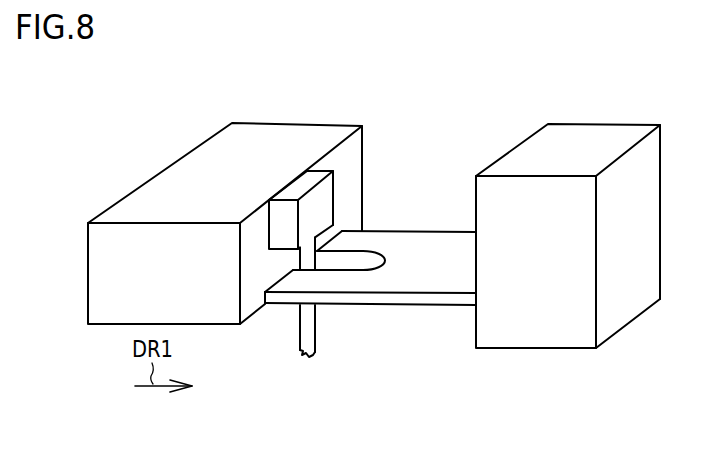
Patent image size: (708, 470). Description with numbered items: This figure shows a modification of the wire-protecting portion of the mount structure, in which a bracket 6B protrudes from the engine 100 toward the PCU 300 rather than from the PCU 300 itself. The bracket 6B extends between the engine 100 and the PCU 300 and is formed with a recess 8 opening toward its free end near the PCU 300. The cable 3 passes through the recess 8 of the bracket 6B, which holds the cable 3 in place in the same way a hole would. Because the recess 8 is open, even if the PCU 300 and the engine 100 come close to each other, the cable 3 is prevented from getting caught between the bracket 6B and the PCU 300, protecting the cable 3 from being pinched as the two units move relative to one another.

The PCU 300 is at (197, 138).
The bracket 6B is at (423, 246).
The recess 8 is at (352, 266).
The cable 3 is at (308, 325).
The engine 100 is at (602, 118).